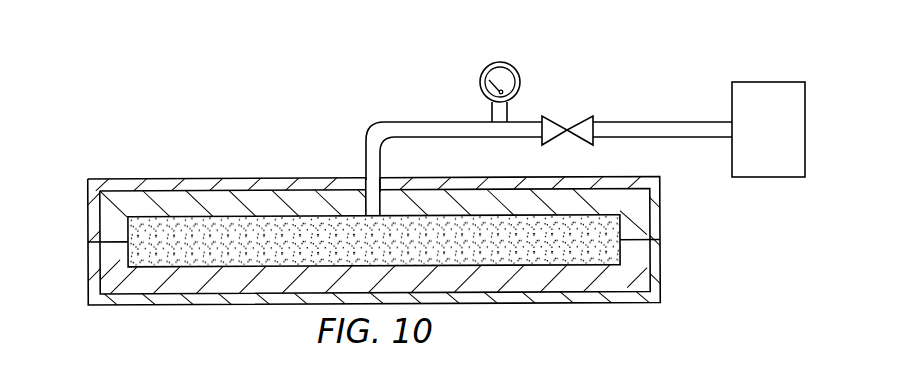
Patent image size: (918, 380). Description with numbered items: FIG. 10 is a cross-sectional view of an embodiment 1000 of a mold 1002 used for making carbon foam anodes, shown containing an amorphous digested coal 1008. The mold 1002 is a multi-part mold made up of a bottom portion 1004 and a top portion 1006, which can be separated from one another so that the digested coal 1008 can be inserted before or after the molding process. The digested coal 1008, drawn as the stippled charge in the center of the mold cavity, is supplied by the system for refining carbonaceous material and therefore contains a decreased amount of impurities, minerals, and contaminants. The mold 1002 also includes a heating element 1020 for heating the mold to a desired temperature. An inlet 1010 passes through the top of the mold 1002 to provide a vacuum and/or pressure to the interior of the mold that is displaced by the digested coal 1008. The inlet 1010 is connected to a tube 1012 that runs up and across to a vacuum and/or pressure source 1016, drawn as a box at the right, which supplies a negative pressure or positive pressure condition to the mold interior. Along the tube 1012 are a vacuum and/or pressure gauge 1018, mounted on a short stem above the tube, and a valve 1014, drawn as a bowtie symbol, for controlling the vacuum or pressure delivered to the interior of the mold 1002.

The embodiment 1000 is at (82, 151).
The mold 1002 is at (668, 275).
The bottom portion 1004 is at (205, 283).
The top portion 1006 is at (177, 190).
The amorphous digested coal 1008 is at (530, 255).
The inlet 1010 is at (360, 212).
The tube 1012 is at (394, 122).
The valve 1014 is at (575, 117).
The vacuum and/or pressure source 1016 is at (768, 82).
The vacuum and/or pressure gauge 1018 is at (482, 72).
The heating element 1020 is at (97, 283).